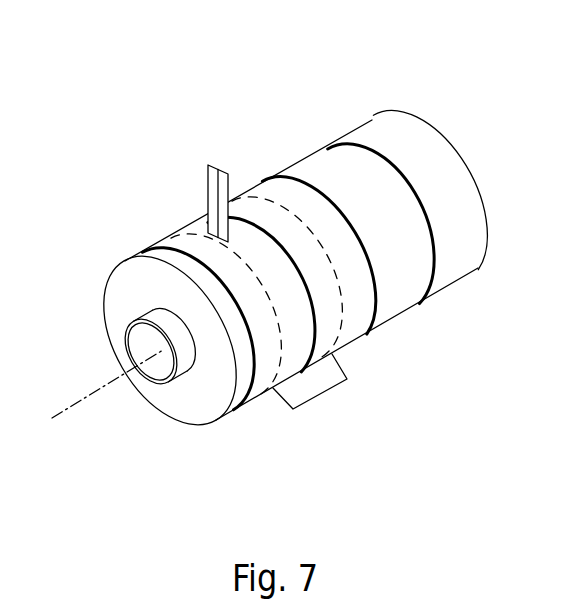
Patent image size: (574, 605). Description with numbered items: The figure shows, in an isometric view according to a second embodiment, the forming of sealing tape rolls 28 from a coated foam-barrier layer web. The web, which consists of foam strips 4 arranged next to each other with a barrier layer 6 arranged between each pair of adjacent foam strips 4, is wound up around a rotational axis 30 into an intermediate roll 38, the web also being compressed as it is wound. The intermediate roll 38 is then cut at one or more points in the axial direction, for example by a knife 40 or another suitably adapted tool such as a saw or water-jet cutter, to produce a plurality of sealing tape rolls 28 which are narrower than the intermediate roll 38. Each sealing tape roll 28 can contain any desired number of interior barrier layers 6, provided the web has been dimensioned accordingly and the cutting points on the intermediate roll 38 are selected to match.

The foam strip 4 is at (282, 192).
The barrier layer 6 is at (242, 218).
The sealing tape roll 28 is at (327, 394).
The rotational axis 30 is at (97, 390).
The intermediate roll 38 is at (163, 253).
The knife 40 is at (208, 167).